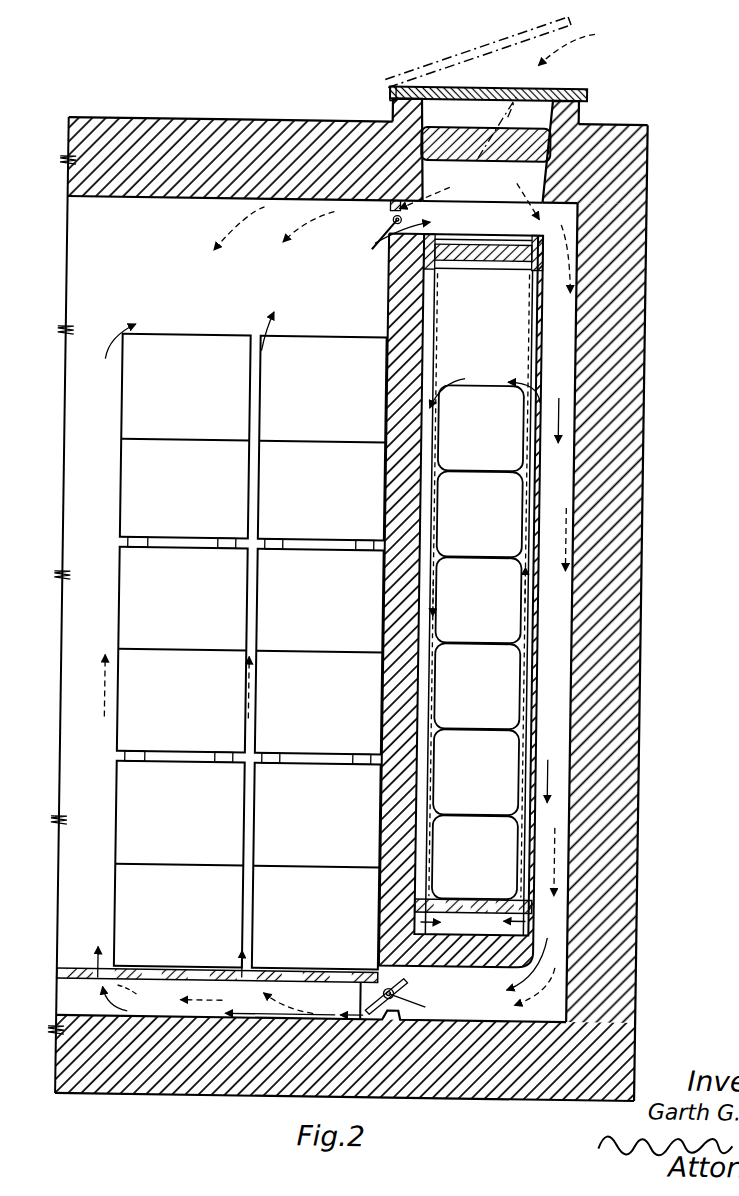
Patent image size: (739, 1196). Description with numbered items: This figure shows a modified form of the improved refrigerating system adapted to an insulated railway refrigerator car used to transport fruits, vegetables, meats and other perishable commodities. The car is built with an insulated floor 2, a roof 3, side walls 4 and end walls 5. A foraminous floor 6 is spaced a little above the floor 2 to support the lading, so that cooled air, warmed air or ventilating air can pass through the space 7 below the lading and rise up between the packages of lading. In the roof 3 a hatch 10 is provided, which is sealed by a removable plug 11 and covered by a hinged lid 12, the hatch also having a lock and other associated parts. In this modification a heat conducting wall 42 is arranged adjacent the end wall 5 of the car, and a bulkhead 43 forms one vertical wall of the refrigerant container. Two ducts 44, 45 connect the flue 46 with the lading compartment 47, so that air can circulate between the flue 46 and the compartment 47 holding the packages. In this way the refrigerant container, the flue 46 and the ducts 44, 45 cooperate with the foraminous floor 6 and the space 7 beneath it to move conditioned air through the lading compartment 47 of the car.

The insulated floor 2 is at (345, 1053).
The roof 3 is at (358, 149).
The side wall 4 is at (62, 252).
The end wall 5 is at (606, 612).
The foraminous floor 6 is at (133, 975).
The space 7 is at (218, 1000).
The hatch 10 is at (493, 126).
The removable plug 11 is at (485, 144).
The hinged lid 12 is at (485, 46).
The heat conducting wall 42 is at (528, 669).
The bulkhead 43 is at (475, 595).
The duct 44 is at (384, 205).
The duct 45 is at (383, 993).
The flue 46 is at (540, 701).
The lading compartment 47 is at (243, 587).